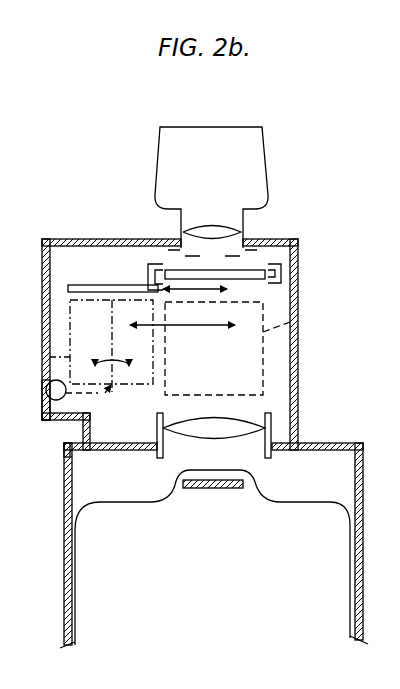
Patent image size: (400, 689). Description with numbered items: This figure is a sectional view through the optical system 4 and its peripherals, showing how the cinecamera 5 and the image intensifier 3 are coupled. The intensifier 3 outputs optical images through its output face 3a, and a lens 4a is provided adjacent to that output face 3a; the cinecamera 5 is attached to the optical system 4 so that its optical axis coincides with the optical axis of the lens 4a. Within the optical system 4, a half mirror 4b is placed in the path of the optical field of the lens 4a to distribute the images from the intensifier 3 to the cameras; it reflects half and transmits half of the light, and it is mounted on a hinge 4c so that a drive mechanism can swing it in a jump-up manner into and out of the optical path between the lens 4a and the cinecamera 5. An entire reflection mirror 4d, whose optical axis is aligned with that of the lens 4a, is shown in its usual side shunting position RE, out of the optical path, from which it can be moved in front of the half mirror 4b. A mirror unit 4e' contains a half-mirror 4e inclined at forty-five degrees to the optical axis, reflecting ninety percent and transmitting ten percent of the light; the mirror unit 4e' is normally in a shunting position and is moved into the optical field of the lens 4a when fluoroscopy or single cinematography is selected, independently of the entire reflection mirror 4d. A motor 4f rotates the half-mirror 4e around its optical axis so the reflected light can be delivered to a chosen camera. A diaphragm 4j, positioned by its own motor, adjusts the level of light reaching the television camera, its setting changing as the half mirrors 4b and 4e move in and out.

The cinecamera 5 is at (165, 150).
The diaphragm 4j is at (172, 255).
The optical system 4 is at (333, 375).
The hinge 4c is at (298, 270).
The entire reflection mirror 4d is at (90, 285).
The half mirror 4b is at (253, 280).
The mirror unit 4e' is at (78, 346).
The half-mirror 4e is at (52, 377).
The motor 4f is at (44, 410).
The lens 4a is at (250, 428).
The intensifier 3 is at (363, 512).
The output face 3a is at (200, 488).